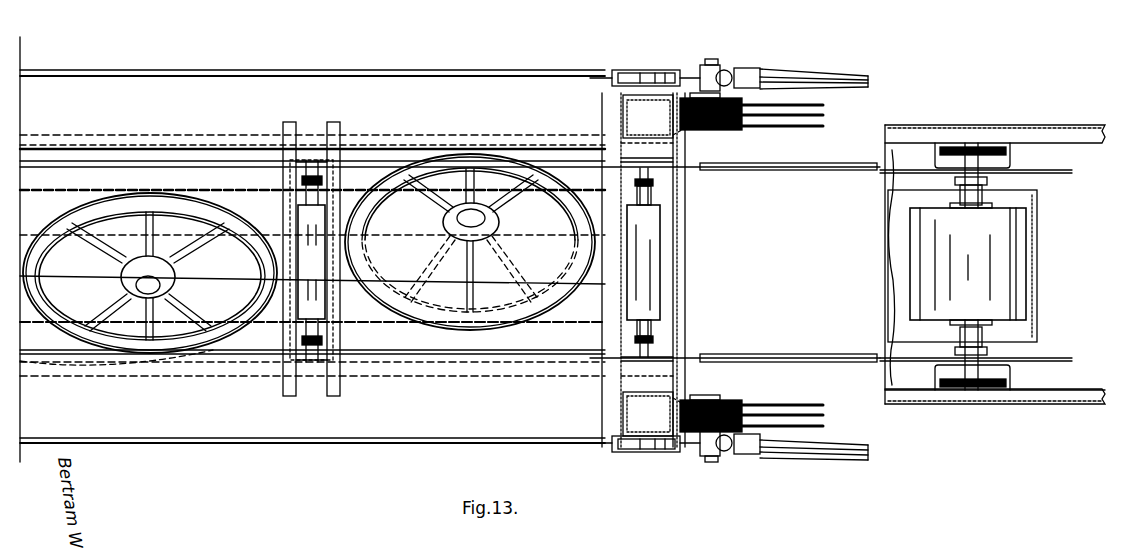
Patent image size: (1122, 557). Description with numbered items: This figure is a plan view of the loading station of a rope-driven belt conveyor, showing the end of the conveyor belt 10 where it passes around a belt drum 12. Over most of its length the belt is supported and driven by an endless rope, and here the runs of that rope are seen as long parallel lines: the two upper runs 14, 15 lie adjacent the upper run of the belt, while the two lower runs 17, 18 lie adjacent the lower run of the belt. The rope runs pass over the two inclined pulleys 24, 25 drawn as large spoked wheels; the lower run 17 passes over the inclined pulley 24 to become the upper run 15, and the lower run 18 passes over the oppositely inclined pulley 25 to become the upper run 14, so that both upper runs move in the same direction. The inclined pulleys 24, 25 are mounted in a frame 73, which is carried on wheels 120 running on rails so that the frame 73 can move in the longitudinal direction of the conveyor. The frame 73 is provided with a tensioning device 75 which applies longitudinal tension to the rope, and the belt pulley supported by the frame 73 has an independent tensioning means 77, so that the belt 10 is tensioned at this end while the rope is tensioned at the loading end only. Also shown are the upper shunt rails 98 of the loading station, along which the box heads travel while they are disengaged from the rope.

The conveyor belt 10 is at (898, 212).
The belt drum 12 is at (918, 288).
The upper run of rope 14 is at (70, 190).
The upper run of rope 15 is at (376, 322).
The lower run of rope 17 is at (216, 149).
The lower run of rope 18 is at (66, 378).
The inclined pulley 24 is at (574, 212).
The inclined pulley 25 is at (214, 214).
The frame 73 is at (600, 326).
The tensioning device 75 is at (735, 130).
The tensioning means 77 is at (1054, 402).
The upper shunt rails 98 is at (797, 164).
The wheel 120 is at (637, 70).